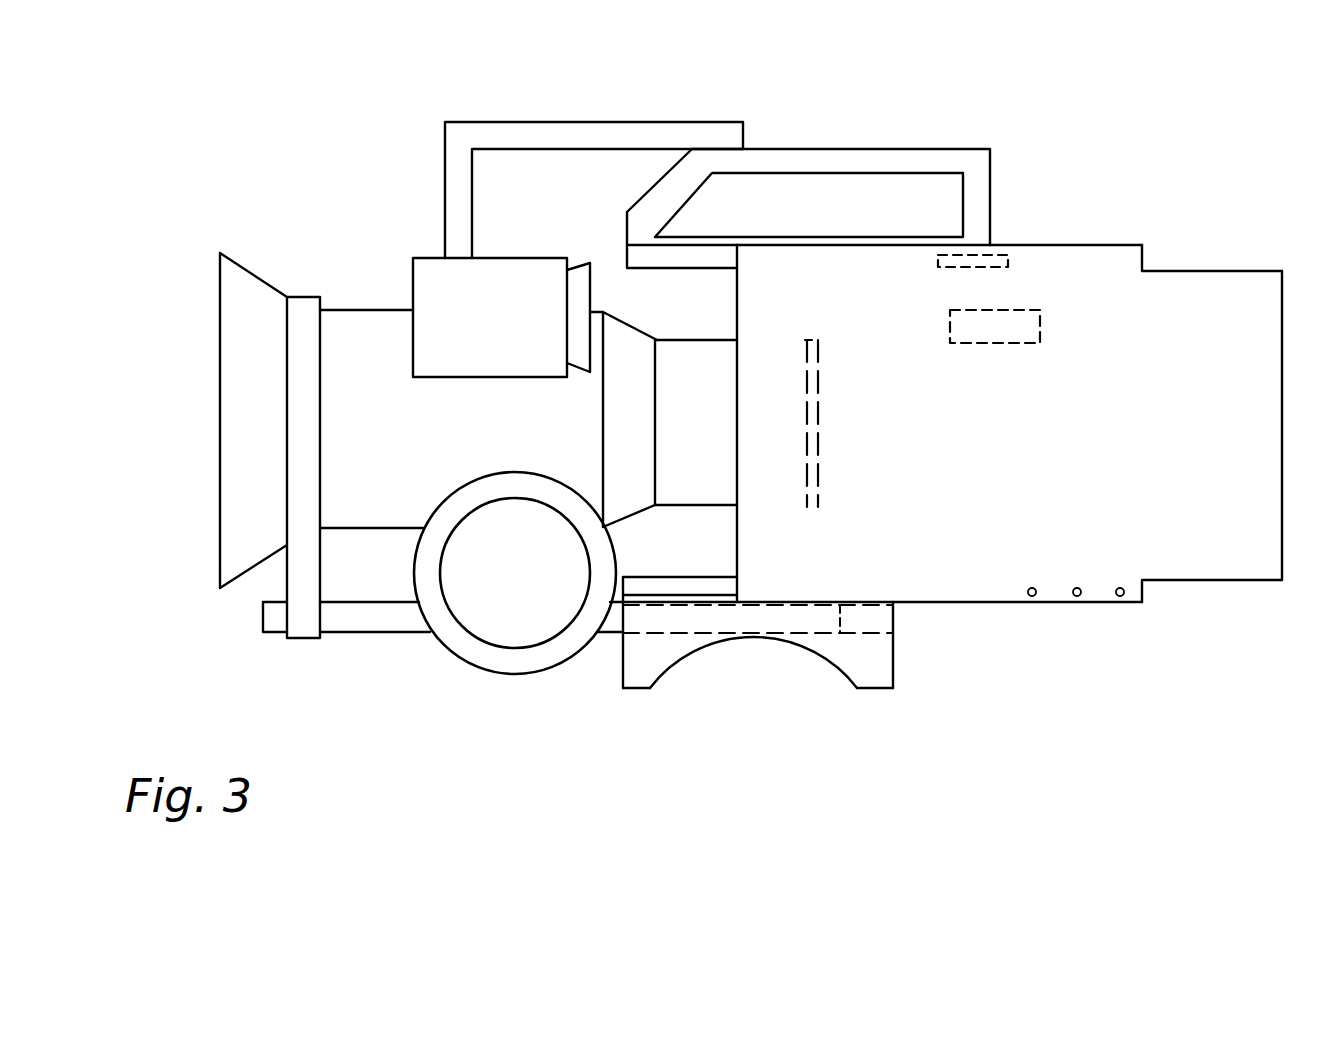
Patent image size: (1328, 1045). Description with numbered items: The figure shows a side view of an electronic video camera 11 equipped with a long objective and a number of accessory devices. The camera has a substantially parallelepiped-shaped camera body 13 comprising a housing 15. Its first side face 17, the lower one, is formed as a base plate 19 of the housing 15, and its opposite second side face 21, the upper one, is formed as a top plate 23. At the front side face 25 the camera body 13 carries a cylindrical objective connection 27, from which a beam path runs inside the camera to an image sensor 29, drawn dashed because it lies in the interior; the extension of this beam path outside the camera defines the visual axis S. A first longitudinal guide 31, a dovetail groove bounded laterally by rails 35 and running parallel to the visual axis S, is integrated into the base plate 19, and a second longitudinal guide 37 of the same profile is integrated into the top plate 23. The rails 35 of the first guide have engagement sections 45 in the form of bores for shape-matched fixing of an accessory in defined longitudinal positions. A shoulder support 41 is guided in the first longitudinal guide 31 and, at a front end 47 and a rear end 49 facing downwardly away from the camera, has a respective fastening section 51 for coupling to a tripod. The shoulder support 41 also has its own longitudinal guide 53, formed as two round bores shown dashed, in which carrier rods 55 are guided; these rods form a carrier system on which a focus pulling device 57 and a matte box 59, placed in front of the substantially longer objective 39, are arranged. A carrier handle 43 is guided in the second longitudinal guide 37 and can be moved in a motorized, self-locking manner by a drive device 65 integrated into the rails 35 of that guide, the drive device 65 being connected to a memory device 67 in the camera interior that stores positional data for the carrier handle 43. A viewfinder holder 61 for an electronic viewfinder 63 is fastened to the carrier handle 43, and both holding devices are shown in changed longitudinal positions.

The electronic video camera 11 is at (291, 141).
The camera body 13 is at (965, 386).
The housing 15 is at (1205, 535).
The first side face 17 is at (1212, 641).
The base plate 19 is at (1167, 585).
The second side face 21 is at (1212, 220).
The top plate 23 is at (1191, 266).
The front side face 25 is at (735, 312).
The objective connection 27 is at (696, 422).
The image sensor 29 is at (812, 372).
The first longitudinal guide 31 is at (950, 607).
The rails 35 is at (1057, 260).
The second longitudinal guide 37 is at (1031, 243).
The objective 39 is at (488, 419).
The shoulder support 41 is at (778, 675).
The carrier handle 43 is at (863, 157).
The engagement sections 45 is at (1137, 556).
The front end 47 is at (640, 675).
The rear end 49 is at (878, 675).
The fastening section 51 is at (638, 690).
The longitudinal guide 53 is at (857, 620).
The carrier rods 55 is at (363, 620).
The focus pulling device 57 is at (522, 627).
The matte box 59 is at (270, 445).
The viewfinder holder 61 is at (528, 133).
The electronic viewfinder 63 is at (501, 317).
The drive device 65 is at (970, 263).
The memory device 67 is at (978, 335).
The visual axis S is at (220, 418).